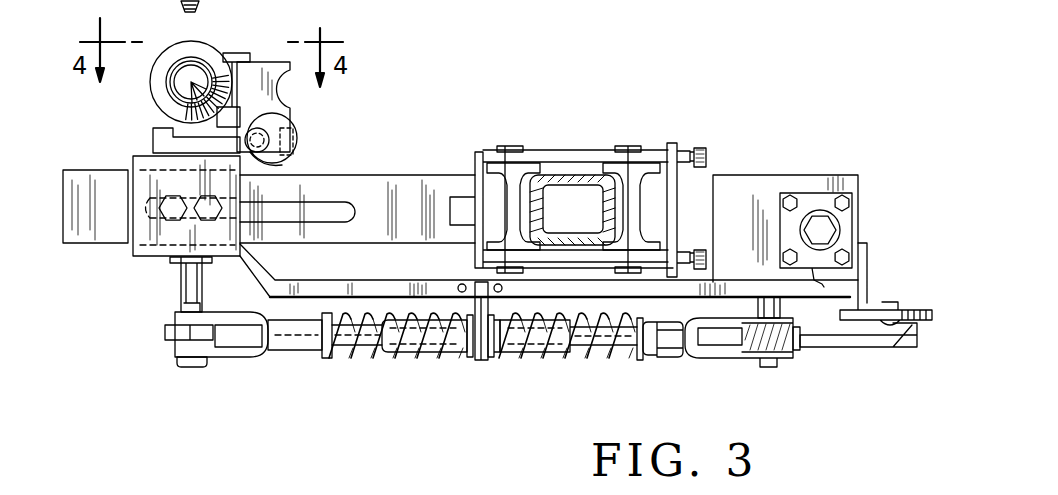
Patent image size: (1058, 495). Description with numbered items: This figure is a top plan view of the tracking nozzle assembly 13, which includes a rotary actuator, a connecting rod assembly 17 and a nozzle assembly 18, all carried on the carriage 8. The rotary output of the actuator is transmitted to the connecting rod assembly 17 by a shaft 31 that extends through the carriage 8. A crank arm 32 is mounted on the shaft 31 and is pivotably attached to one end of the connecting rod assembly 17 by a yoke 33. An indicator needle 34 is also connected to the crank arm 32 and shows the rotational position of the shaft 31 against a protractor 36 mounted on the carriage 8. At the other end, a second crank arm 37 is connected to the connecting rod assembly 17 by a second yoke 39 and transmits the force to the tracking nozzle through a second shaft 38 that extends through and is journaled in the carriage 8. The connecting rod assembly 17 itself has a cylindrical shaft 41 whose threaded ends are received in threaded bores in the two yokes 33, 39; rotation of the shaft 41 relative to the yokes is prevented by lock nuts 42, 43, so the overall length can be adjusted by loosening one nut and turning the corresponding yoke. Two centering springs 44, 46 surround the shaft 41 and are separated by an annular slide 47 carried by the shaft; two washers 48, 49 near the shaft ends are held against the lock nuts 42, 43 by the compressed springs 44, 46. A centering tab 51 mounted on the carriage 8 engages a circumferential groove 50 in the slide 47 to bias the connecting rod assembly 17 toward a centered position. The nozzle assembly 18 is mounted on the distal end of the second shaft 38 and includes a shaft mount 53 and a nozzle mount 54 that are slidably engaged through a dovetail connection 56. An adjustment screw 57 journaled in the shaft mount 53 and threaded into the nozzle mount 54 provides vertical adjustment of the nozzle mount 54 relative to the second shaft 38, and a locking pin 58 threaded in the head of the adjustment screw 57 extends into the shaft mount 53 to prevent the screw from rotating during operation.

The carriage 8 is at (386, 190).
The tracking nozzle assembly 13 is at (146, 322).
The connecting rod assembly 17 is at (408, 400).
The nozzle assembly 18 is at (211, 41).
The shaft 31 is at (782, 302).
The crank arm 32 is at (798, 349).
The yoke 33 is at (722, 356).
The indicator needle 34 is at (856, 348).
The protractor 36 is at (921, 310).
The second crank arm 37 is at (180, 340).
The second shaft 38 is at (198, 283).
The second yoke 39 is at (243, 357).
The cylindrical shaft 41 is at (393, 355).
The lock nut 42 is at (314, 347).
The lock nut 43 is at (666, 347).
The centering spring 44 is at (424, 354).
The centering spring 46 is at (556, 354).
The annular slide 47 is at (500, 360).
The washer 48 is at (328, 358).
The washer 49 is at (640, 357).
The circumferential groove 50 is at (482, 362).
The centering tab 51 is at (473, 285).
The shaft mount 53 is at (252, 160).
The nozzle mount 54 is at (264, 68).
The dovetail connection 56 is at (293, 118).
The adjustment screw 57 is at (293, 165).
The locking pin 58 is at (250, 127).